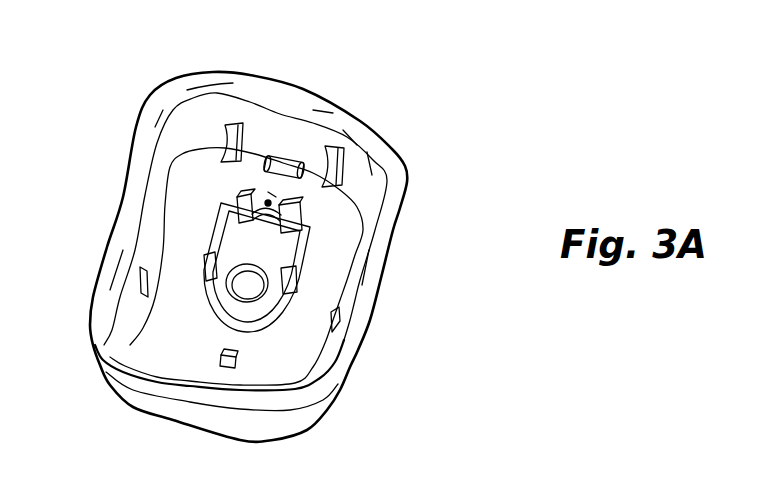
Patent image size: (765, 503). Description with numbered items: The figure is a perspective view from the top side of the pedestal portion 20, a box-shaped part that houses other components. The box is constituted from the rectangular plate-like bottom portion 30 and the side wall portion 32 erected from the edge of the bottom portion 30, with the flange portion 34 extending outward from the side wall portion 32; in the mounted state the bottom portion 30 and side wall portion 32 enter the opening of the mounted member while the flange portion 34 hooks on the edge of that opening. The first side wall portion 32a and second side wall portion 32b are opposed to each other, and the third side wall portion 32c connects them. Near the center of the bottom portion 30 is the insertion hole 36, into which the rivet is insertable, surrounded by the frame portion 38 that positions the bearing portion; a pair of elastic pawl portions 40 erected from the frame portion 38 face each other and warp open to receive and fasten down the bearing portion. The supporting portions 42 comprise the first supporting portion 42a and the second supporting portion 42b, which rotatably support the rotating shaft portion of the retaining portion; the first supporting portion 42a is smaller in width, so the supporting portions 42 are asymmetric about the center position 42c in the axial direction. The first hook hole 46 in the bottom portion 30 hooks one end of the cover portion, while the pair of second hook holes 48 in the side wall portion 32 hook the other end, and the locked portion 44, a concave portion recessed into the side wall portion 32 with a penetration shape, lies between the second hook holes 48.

The pedestal portion 20 is at (279, 479).
The bottom portion 30 is at (303, 337).
The side wall portion 32 is at (148, 205).
The first side wall portion 32a is at (308, 128).
The second side wall portion 32b is at (217, 428).
The third side wall portion 32c is at (160, 183).
The flange portion 34 is at (383, 228).
The insertion hole 36 is at (257, 300).
The frame portion 38 is at (305, 248).
The elastic pawl portions 40 is at (195, 255).
The supporting portions 42 is at (259, 196).
The first supporting portion 42a is at (305, 213).
The second supporting portion 42b is at (237, 197).
The center position 42c is at (272, 195).
The locked portion 44 is at (268, 200).
The first hook hole 46 is at (220, 371).
The second hook holes 48 is at (220, 138).